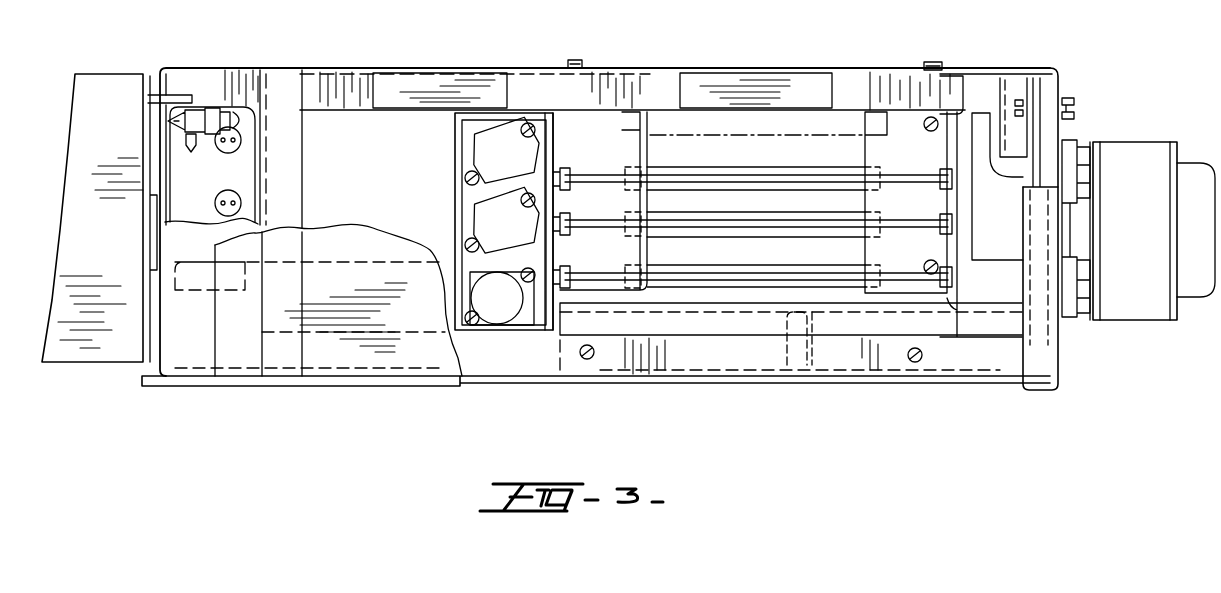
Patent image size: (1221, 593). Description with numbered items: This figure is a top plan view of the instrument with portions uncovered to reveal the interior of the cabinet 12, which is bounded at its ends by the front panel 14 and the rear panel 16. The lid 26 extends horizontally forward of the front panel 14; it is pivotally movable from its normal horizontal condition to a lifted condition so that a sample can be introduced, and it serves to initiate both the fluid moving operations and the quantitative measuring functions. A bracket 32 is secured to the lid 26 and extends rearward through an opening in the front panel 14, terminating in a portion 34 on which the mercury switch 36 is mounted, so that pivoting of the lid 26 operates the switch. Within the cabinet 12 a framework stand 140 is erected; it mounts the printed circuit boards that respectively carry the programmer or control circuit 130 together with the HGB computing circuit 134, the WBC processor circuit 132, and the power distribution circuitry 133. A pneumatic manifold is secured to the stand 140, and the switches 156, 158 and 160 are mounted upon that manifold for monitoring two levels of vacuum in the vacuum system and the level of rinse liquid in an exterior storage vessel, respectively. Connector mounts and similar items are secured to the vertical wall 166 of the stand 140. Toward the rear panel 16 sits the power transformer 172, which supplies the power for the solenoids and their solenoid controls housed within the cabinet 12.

The cabinet 12 is at (420, 384).
The front panel 14 is at (158, 353).
The rear panel 16 is at (1060, 352).
The lid 26 is at (80, 73).
The bracket 32 is at (153, 98).
The portion 34 is at (198, 110).
The mercury switch 36 is at (197, 136).
The programmer or control circuit 130 is at (683, 221).
The WBC processor circuit 132 is at (683, 274).
The power distribution circuitry 133 is at (687, 176).
The HGB computing circuit 134 is at (752, 213).
The framework stand 140 is at (556, 262).
The switch 156 is at (520, 165).
The switch 158 is at (520, 235).
The switch 160 is at (520, 310).
The vertical wall 166 is at (553, 143).
The power transformer 172 is at (1135, 142).